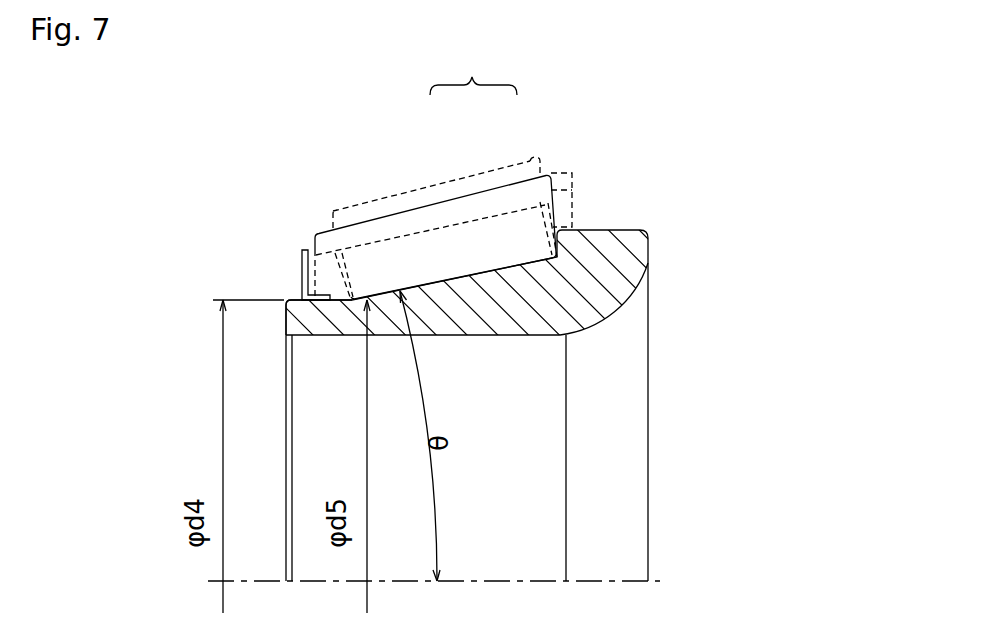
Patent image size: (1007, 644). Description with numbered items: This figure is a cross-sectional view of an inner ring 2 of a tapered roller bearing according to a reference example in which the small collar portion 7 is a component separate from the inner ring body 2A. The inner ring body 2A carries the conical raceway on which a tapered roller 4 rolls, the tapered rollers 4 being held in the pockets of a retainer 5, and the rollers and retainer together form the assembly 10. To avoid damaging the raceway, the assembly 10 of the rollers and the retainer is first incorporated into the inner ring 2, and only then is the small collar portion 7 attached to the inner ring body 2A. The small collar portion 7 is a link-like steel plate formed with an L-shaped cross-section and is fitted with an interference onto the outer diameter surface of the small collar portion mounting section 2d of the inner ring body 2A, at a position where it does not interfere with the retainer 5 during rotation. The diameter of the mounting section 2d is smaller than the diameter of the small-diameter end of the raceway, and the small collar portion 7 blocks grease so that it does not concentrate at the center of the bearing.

The inner ring 2 is at (662, 263).
The inner ring body 2A is at (579, 327).
The small collar portion mounting section 2d is at (292, 313).
The tapered roller 4 is at (418, 193).
The retainer 5 is at (480, 207).
The small collar portion 7 is at (302, 268).
The assembly of the rollers and the retainer 10 is at (443, 172).